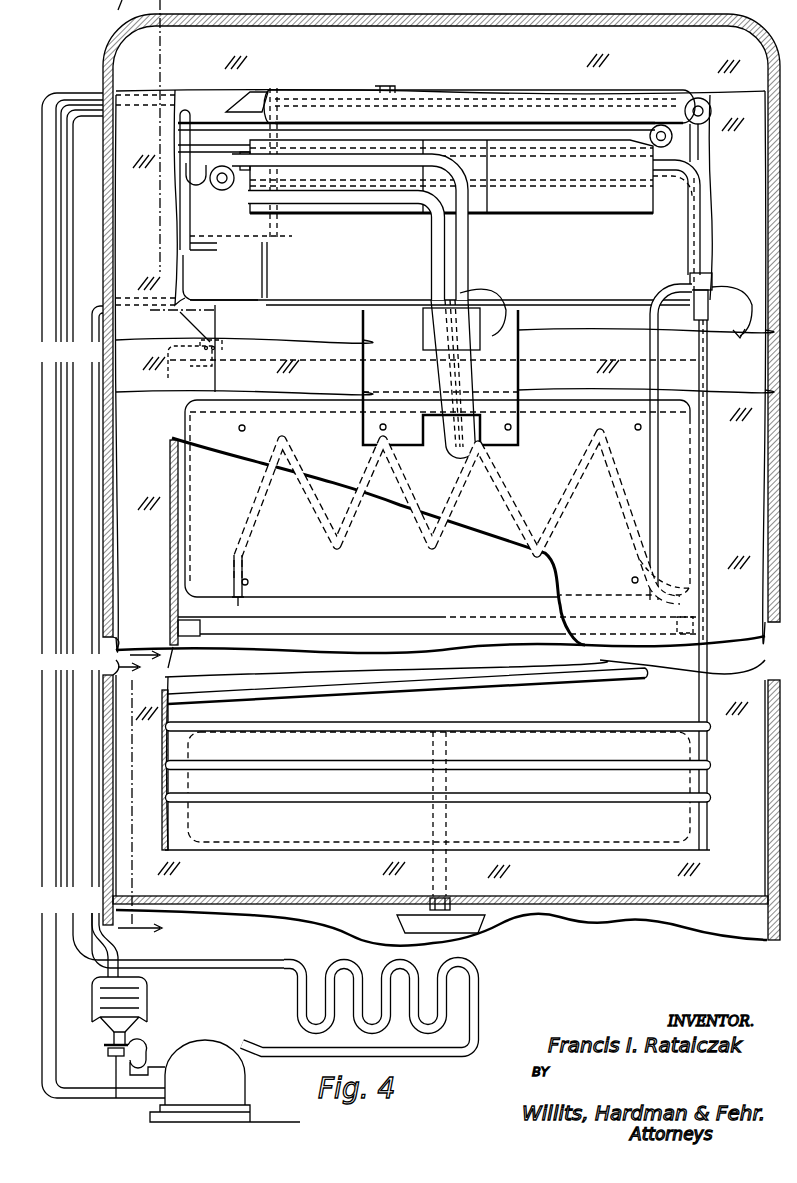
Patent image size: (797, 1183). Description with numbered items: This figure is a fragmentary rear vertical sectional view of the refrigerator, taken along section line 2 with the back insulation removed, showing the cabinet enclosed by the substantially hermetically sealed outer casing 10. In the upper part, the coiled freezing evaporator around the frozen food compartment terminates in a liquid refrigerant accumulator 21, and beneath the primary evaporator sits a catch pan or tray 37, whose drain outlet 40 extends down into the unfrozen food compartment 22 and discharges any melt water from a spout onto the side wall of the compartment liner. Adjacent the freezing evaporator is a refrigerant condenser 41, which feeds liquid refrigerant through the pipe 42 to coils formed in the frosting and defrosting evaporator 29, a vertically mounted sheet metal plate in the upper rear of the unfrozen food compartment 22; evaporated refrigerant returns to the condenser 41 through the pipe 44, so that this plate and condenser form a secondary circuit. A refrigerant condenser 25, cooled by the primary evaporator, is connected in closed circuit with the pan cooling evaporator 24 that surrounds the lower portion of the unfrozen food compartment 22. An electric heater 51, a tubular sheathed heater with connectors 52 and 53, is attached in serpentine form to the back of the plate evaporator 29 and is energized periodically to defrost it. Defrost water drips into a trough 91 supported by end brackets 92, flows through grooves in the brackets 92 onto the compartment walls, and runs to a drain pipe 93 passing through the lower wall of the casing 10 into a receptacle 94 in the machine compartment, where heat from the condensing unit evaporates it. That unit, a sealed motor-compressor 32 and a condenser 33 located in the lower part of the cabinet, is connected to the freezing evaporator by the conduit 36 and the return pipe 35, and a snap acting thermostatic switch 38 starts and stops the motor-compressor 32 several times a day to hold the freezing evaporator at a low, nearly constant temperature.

The section line 2- 2 is at (143, 794).
The outer casing 10 is at (104, 64).
The liquid refrigerant accumulator 21 is at (689, 97).
The unfrozen food compartment 22 is at (532, 715).
The refrigerant pan cooling evaporator 24 is at (656, 714).
The refrigerant condenser 25 is at (690, 254).
The frosting and defrosting evaporator 29 is at (306, 424).
The sealed motor-compressor unit 32 is at (197, 1053).
The condenser 33 is at (348, 958).
The return pipe 35 is at (101, 1097).
The pipe or conduit 36 is at (273, 958).
The catch pan or tray 37 is at (244, 320).
The snap acting thermostatic switch 38 is at (147, 985).
The drain outlet 40 is at (216, 368).
The refrigerant condenser 41 is at (466, 245).
The pipe 42 is at (469, 377).
The pipe 44 is at (432, 240).
The electric heater 51 is at (425, 545).
The connector 52 is at (244, 603).
The connector 53 is at (645, 594).
The trough 91 is at (305, 628).
The end brackets 92 is at (172, 606).
The drain pipe 93 is at (452, 821).
The receptacle 94 is at (402, 926).